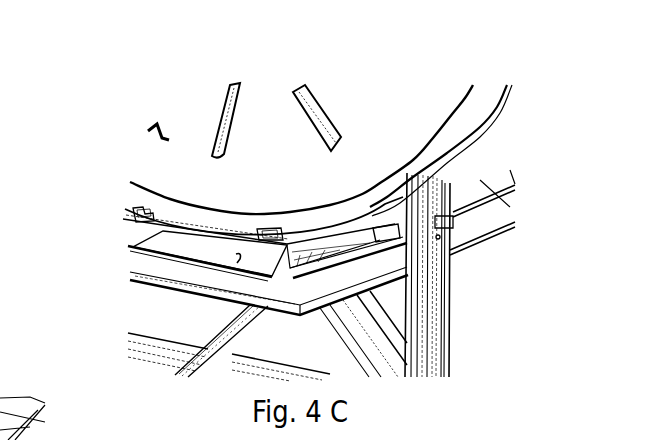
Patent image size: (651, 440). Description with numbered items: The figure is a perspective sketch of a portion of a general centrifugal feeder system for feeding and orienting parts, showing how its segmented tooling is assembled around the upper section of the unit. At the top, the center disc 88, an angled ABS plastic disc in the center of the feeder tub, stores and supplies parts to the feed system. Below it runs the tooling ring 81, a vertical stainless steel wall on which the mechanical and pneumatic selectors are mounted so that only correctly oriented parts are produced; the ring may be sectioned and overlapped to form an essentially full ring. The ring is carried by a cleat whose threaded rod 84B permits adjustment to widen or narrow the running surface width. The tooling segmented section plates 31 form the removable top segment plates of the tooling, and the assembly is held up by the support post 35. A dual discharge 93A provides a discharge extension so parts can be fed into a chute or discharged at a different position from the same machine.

The center disc 88 is at (155, 128).
The threaded rod 84B is at (132, 216).
The tooling ring 81 is at (152, 252).
The dual discharge 93A is at (240, 333).
The tooling segmented section plates 31 is at (478, 180).
The support post 35 is at (443, 322).